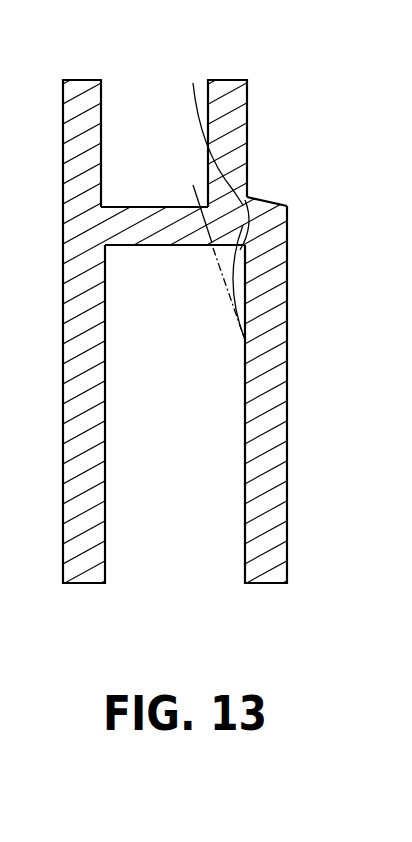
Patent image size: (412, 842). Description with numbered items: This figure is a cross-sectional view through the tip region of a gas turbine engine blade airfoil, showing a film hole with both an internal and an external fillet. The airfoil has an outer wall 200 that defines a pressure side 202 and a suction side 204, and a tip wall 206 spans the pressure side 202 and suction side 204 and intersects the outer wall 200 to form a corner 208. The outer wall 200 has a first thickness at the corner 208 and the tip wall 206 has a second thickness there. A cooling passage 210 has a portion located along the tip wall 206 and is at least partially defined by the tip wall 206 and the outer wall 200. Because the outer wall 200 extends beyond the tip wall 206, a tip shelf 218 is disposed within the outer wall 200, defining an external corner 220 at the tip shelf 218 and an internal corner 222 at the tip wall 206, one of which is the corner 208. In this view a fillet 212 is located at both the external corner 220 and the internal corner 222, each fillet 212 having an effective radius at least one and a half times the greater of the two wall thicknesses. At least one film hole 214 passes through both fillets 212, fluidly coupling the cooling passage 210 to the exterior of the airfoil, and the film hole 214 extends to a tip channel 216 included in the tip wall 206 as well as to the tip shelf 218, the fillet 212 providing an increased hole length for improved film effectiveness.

The outer wall 200 is at (292, 534).
The pressure side 202 is at (63, 497).
The suction side 204 is at (290, 568).
The tip wall 206 is at (118, 247).
The corner 208 is at (260, 243).
The cooling passage 210 is at (187, 413).
The fillet 212 is at (250, 188).
The film hole 214 is at (203, 252).
The tip channel 216 is at (168, 143).
The tip shelf 218 is at (279, 179).
The external corner 220 is at (205, 129).
The internal corner 222 is at (242, 252).